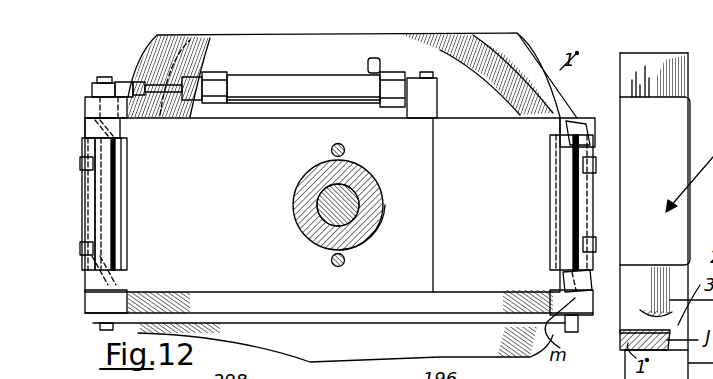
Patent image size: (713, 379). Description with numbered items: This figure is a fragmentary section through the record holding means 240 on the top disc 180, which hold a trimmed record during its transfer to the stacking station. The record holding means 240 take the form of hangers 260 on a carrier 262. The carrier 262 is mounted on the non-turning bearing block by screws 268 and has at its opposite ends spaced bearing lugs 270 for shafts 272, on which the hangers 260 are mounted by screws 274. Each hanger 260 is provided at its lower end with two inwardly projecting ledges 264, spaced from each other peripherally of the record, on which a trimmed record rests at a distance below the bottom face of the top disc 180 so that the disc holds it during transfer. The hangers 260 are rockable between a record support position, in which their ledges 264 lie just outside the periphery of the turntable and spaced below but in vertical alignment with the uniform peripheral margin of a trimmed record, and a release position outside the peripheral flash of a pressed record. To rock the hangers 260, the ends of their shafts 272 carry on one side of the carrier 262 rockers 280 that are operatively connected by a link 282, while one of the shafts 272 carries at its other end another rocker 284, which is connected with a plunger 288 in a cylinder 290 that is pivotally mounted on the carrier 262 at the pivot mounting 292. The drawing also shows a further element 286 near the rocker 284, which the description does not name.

The top disc 180 is at (378, 186).
The record holding means 240 is at (582, 93).
The hanger 260 is at (85, 180).
The carrier 262 is at (468, 143).
The ledge 264 is at (100, 130).
The screw 268 is at (344, 147).
The bearing lug 270 is at (87, 122).
The shaft 272 is at (107, 212).
The screw 274 is at (81, 165).
The rocker 280 is at (94, 316).
The link 282 is at (330, 316).
The rocker 284 is at (88, 100).
The screw 286 is at (105, 78).
The plunger 288 is at (167, 87).
The cylinder 290 is at (288, 83).
The pivot mounting 292 is at (430, 76).